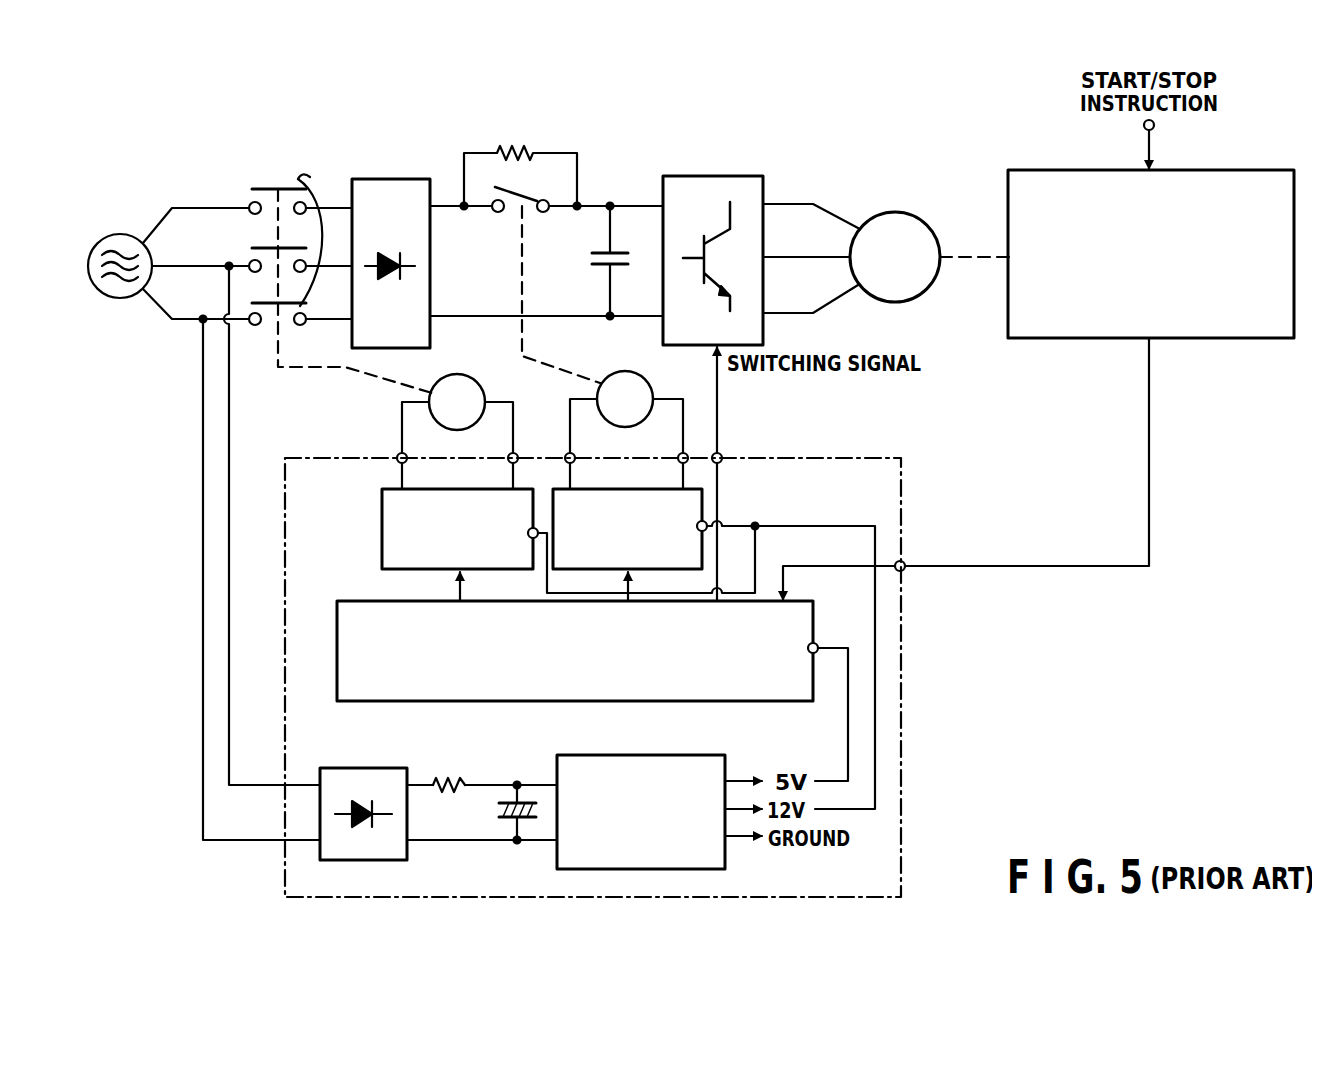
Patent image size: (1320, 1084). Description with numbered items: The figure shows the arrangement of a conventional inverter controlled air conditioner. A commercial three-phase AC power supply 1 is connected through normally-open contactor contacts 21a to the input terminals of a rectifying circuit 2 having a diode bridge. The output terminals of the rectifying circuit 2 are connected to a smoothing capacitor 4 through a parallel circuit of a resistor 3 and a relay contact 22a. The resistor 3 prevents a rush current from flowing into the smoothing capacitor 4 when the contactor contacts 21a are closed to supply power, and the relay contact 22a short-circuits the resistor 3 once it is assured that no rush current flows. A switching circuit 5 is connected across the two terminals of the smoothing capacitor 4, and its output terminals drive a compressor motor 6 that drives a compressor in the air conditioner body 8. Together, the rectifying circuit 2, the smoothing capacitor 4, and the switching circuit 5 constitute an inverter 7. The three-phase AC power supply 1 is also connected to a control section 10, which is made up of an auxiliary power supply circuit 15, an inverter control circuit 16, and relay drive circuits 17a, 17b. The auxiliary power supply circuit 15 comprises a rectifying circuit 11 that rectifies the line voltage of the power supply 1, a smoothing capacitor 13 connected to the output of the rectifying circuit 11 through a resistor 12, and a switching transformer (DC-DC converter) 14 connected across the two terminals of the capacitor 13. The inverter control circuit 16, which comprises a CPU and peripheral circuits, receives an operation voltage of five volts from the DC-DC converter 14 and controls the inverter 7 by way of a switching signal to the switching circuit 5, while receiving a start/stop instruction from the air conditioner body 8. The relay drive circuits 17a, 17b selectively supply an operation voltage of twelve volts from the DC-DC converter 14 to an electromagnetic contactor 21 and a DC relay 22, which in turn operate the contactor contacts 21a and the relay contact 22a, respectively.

The three-phase AC power supply 1 is at (92, 246).
The rectifying circuit 2 is at (375, 178).
The resistor 3 is at (503, 148).
The smoothing capacitor 4 is at (590, 259).
The switching circuit 5 is at (736, 175).
The compressor motor 6 is at (884, 212).
The inverter 7 is at (640, 170).
The air conditioner body 8 is at (1017, 169).
The control section 10 is at (753, 457).
The rectifying circuit 11 is at (355, 767).
The resistor 12 is at (446, 778).
The smoothing capacitor 13 is at (500, 811).
The switching transformer (DC-DC converter) 14 is at (698, 754).
The auxiliary power supply circuit 15 is at (474, 850).
The inverter control circuit 16 is at (337, 642).
The relay drive circuit 17a is at (382, 522).
The relay drive circuit 17b is at (702, 510).
The electromagnetic contactor 21 is at (486, 360).
The contactor contacts 21a is at (340, 271).
The DC relay 22 is at (617, 370).
The relay contact 22a is at (525, 191).